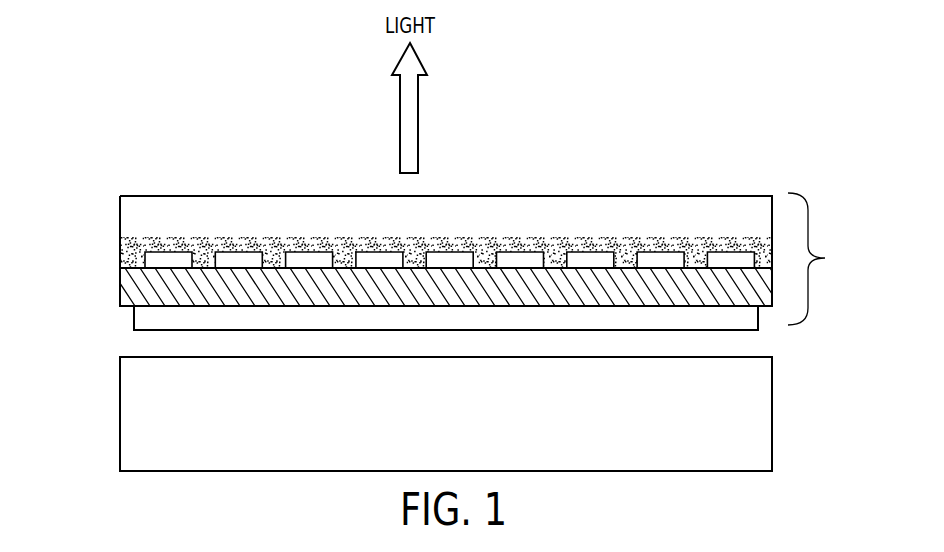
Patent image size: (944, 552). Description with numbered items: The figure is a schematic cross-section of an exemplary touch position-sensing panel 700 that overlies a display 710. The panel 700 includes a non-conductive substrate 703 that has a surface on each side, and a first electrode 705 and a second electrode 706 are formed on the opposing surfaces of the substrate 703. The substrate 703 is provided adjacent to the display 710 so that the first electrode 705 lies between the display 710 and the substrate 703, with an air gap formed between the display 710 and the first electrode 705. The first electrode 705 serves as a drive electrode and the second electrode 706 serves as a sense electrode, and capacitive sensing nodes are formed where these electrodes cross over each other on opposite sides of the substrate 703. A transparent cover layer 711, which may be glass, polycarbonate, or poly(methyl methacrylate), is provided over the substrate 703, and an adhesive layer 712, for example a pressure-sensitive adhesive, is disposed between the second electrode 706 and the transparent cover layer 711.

The touch position-sensing panel 700 is at (824, 259).
The substrate 703 is at (121, 297).
The first electrode 705 is at (138, 313).
The second electrode 706 is at (155, 261).
The display 710 is at (758, 412).
The transparent cover layer 711 is at (652, 207).
The adhesive layer 712 is at (126, 245).